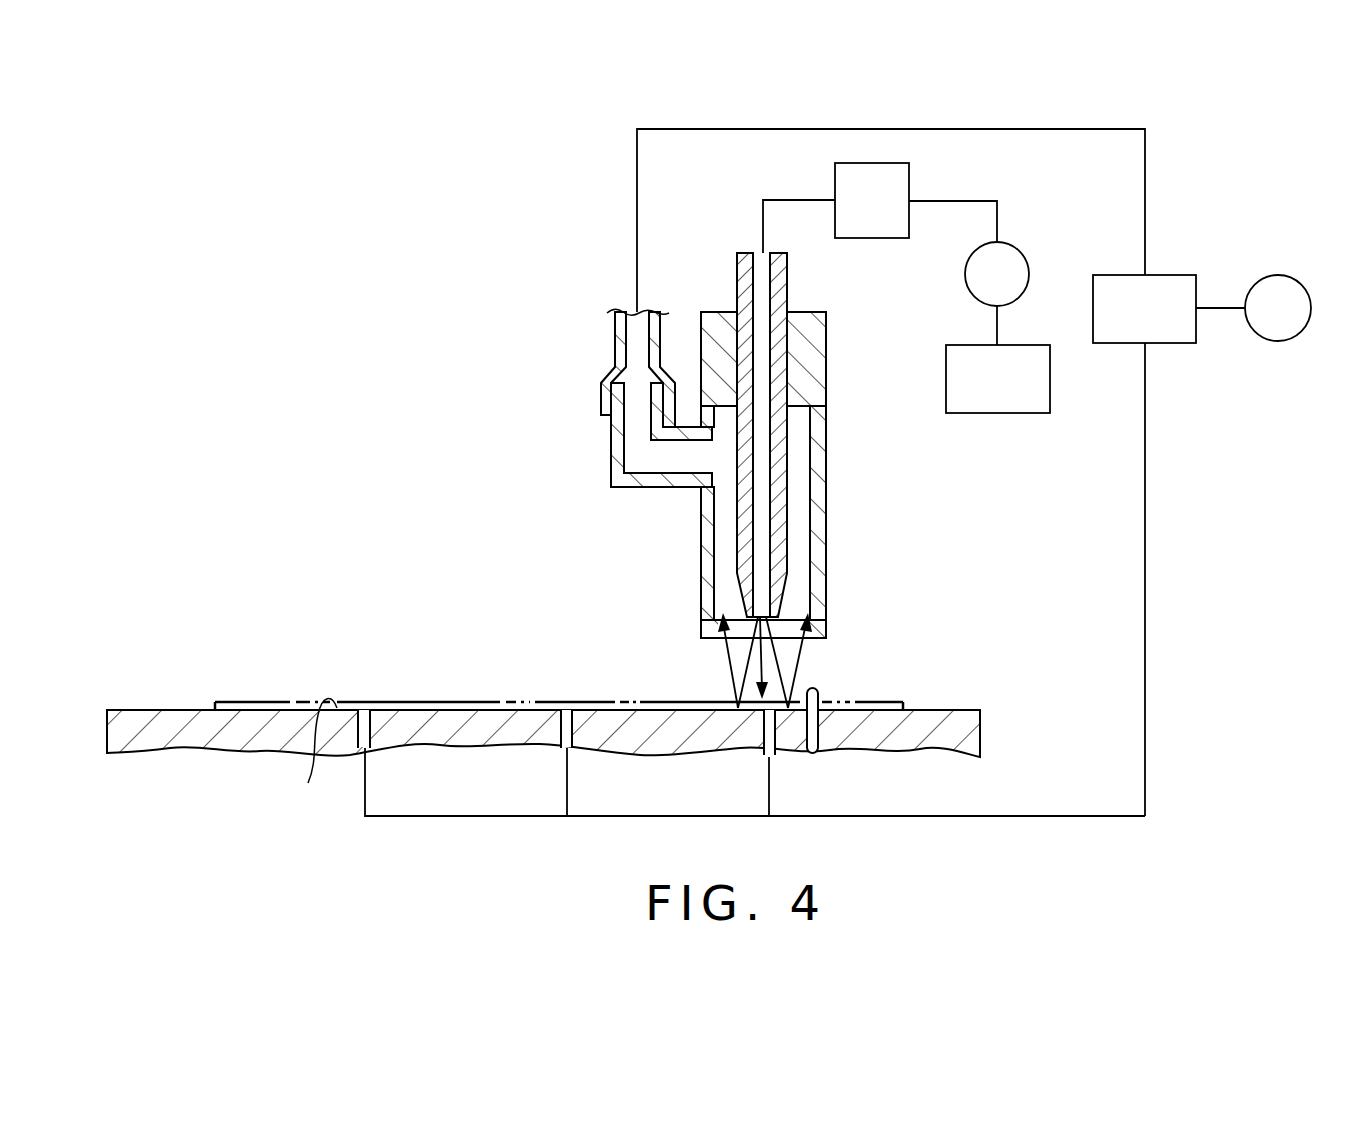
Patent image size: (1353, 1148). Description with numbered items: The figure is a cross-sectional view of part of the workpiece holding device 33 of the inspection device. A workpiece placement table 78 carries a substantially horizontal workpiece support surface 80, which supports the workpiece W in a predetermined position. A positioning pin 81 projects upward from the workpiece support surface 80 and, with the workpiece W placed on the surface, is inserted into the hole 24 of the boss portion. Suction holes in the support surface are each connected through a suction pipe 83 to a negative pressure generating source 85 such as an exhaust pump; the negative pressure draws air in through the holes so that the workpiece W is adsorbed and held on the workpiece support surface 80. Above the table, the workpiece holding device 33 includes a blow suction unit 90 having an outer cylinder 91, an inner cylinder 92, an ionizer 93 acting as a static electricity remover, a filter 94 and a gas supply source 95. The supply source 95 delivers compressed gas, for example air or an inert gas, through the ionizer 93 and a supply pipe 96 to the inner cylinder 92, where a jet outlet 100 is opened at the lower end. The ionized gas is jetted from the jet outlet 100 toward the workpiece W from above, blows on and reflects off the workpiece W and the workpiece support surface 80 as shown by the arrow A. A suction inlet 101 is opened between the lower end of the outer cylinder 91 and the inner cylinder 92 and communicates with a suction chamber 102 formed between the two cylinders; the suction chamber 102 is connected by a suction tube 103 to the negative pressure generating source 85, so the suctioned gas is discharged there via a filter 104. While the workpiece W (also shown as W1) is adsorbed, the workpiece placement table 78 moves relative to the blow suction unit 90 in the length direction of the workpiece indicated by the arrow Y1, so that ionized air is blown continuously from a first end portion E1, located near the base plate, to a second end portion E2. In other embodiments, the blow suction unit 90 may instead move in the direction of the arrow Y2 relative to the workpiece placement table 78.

The workpiece holding device 33 is at (401, 368).
The hole 24 is at (847, 712).
The workpiece placement table 78 is at (150, 720).
The workpiece support surface 80 is at (314, 756).
The positioning pin 81 is at (822, 689).
The suction pipe 83 is at (1008, 817).
The negative pressure generating source 85 is at (1178, 275).
The blow suction unit 90 is at (842, 340).
The outer cylinder 91 is at (827, 480).
The inner cylinder 92 is at (788, 540).
The ionizer 93 is at (909, 178).
The filter 94 is at (1021, 254).
The gas supply source 95 is at (1027, 413).
The supply pipe 96 is at (791, 200).
The jet outlet 100 is at (775, 626).
The suction inlet 101 is at (713, 637).
The suction chamber 102 is at (727, 521).
The suction tube 103 is at (805, 125).
The filter 104 is at (1279, 275).
The arrow A is at (728, 663).
The workpiece W is at (559, 659).
The workpiece W1 is at (498, 688).
The first end portion E1 is at (890, 700).
The second end portion E2 is at (253, 701).
The arrow Y1 is at (1000, 675).
The arrow Y2 is at (682, 570).